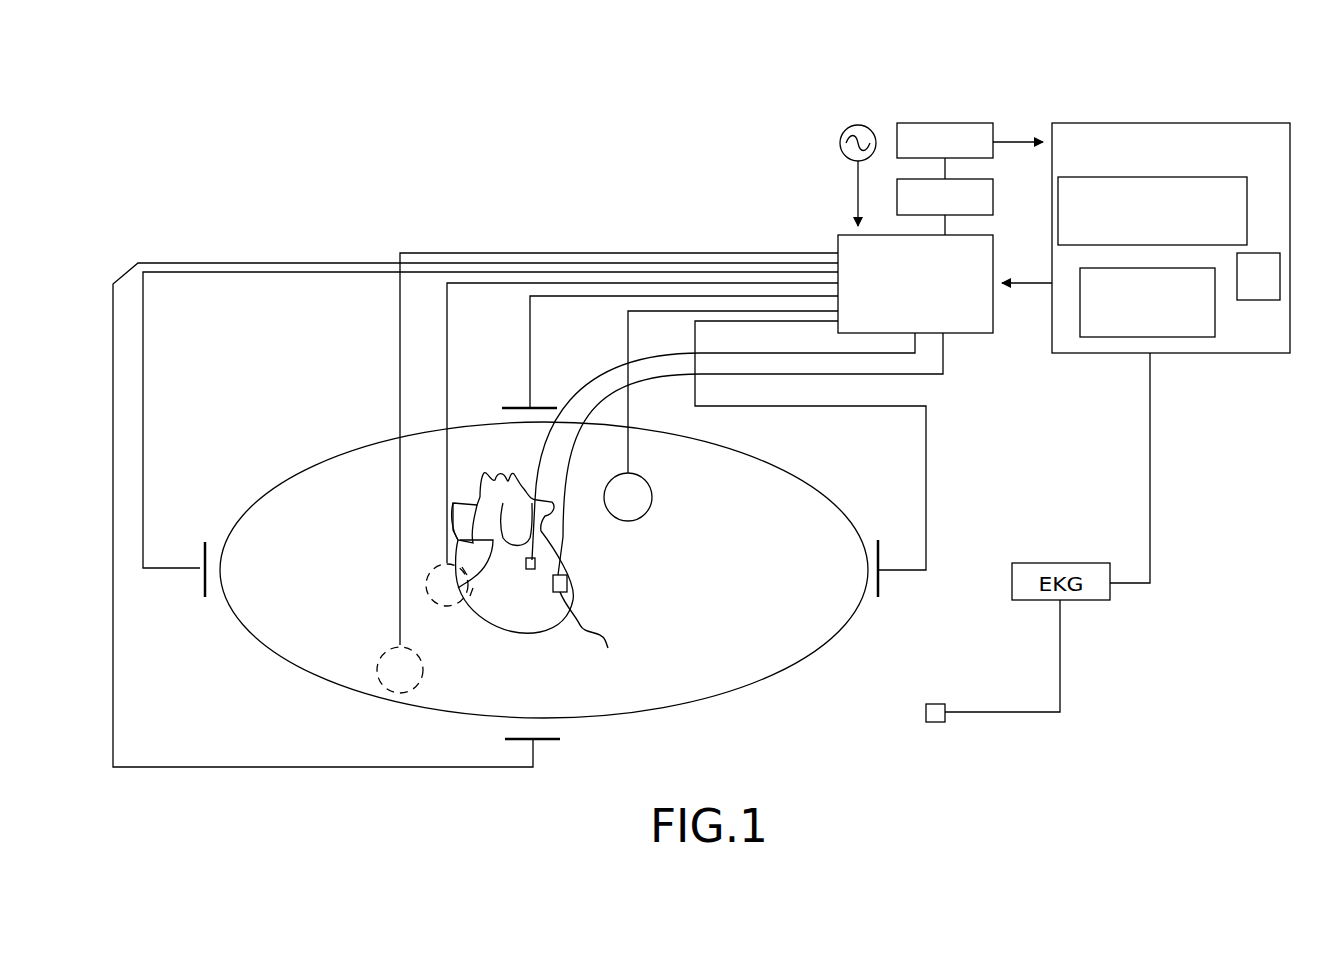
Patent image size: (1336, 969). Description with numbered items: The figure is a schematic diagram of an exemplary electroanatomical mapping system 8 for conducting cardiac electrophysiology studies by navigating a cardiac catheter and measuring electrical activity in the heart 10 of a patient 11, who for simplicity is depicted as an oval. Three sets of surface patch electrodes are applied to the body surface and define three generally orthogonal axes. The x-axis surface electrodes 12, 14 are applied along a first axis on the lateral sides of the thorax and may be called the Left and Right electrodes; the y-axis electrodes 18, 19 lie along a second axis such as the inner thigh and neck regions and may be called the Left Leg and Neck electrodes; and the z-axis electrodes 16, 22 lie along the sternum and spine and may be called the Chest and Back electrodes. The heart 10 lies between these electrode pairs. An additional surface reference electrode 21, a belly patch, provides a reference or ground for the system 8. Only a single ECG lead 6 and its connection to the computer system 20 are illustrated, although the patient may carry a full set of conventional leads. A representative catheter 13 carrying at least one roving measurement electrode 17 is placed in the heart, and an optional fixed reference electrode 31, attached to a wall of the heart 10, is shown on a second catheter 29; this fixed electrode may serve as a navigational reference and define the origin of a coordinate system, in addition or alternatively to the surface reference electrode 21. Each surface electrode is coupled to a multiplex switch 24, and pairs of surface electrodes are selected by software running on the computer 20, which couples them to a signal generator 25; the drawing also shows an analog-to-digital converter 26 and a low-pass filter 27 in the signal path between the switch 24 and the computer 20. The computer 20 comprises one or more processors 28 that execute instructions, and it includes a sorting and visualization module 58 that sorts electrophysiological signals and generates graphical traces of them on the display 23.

The lead 6 is at (926, 718).
The electroanatomical mapping system 8 is at (200, 175).
The heart 10 is at (567, 580).
The patient 11 is at (775, 466).
The x-axis surface electrode 12 is at (518, 407).
The catheter 13 is at (943, 355).
The x-axis surface electrode 14 is at (535, 750).
The z-axis electrode 16 is at (628, 446).
The catheter electrode 17 is at (590, 630).
The y-axis electrode 18 is at (204, 585).
The y-axis electrode 19 is at (880, 580).
The computer system 20 is at (1146, 353).
The surface reference electrode 21 is at (400, 583).
The z-axis electrode 22 is at (447, 335).
The display 23 is at (1147, 302).
The multiplex switch 24 is at (915, 284).
The signal generator 25 is at (844, 132).
The analog-to-digital converter 26 is at (963, 123).
The low pass filter 27 is at (993, 190).
The processor 28 is at (1152, 211).
The second catheter 29 is at (548, 438).
The fixed reference electrode 31 is at (530, 569).
The sorting and visualization module 58 is at (1258, 276).